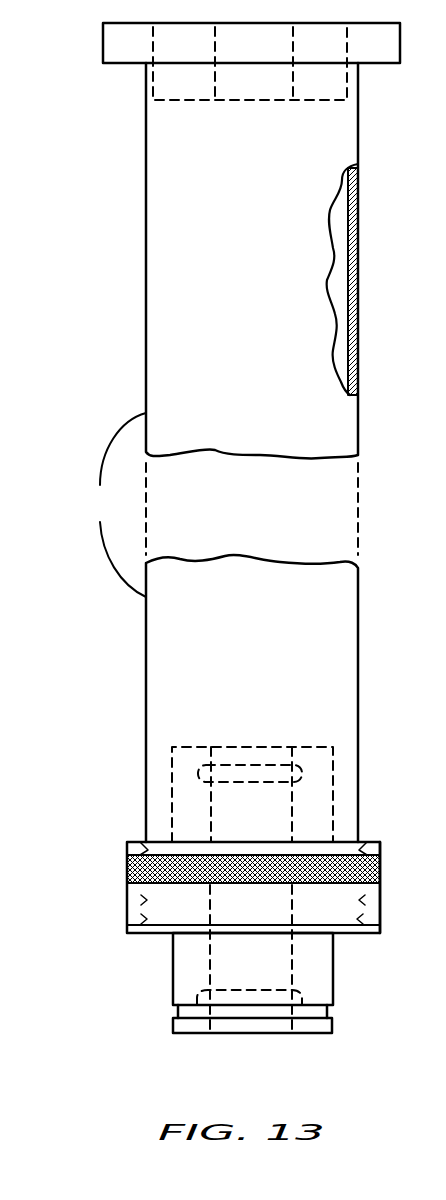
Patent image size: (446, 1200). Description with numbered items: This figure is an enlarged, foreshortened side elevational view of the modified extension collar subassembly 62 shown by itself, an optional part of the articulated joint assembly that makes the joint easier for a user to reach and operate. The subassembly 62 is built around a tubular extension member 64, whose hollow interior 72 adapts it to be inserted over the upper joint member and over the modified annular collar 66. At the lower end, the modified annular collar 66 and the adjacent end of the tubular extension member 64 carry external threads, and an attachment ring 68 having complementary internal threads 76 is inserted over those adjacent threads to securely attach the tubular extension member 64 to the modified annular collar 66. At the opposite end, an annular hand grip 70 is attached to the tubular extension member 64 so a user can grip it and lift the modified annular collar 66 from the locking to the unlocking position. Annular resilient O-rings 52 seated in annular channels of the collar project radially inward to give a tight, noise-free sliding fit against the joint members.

The O-rings 52 is at (242, 762).
The modified extension collar subassembly 62 is at (118, 250).
The tubular extension member 64 is at (110, 505).
The modified annular collar 66 is at (168, 968).
The attachment ring 68 is at (127, 905).
The annular hand grip 70 is at (103, 42).
The hollow interior 72 is at (340, 283).
The internal threads 76 is at (350, 936).